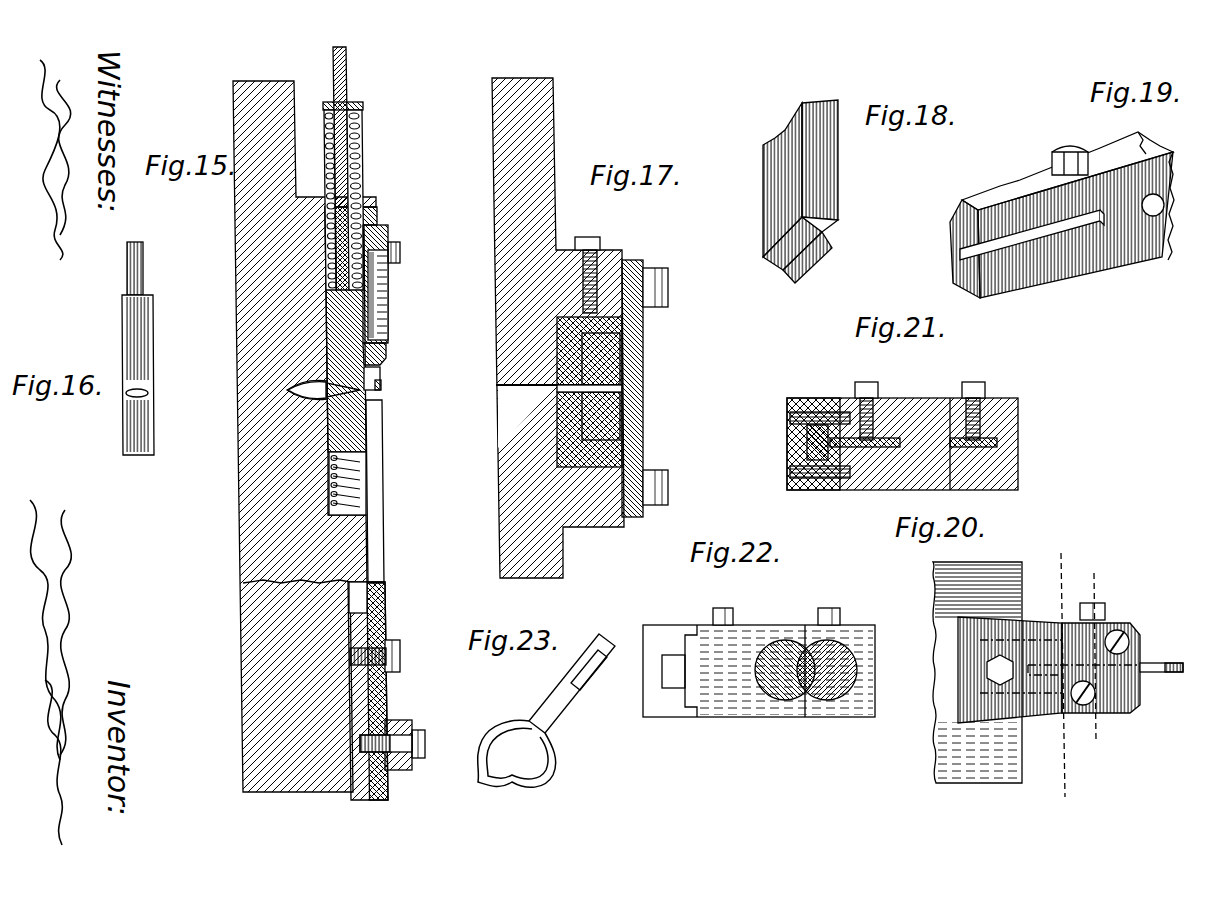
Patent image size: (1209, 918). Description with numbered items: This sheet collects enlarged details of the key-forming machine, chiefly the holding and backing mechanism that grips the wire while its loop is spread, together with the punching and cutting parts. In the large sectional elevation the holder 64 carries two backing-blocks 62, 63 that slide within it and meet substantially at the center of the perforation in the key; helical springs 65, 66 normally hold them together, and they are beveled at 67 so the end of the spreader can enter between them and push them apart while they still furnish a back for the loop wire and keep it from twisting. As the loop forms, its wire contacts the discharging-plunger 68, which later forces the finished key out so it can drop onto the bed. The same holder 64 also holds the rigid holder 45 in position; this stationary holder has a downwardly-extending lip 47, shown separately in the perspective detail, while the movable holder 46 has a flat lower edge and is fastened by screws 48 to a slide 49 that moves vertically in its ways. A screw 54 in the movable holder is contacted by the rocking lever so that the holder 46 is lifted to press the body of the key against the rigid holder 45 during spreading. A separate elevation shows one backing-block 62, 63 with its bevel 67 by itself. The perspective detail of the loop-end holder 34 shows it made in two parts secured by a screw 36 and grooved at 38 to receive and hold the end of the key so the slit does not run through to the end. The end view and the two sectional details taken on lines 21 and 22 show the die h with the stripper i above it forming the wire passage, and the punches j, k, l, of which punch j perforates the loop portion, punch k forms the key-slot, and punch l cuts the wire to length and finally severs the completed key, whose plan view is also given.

In FIG. 15, the holder 64 is at (255, 272).
In FIG. 17, the holder 64 is at (507, 230).
In FIG. 15, the backing-block 62 is at (343, 340).
In FIG. 16, the backing-block 62 is at (183, 352).
In FIG. 15, the backing-block 63 is at (333, 425).
In FIG. 16, the backing-block 63 is at (183, 420).
In FIG. 15, the helical spring 65 is at (340, 490).
In FIG. 15, the helical spring 66 is at (348, 161).
In FIG. 16, the bevel 67 is at (130, 395).
In FIG. 15, the discharging-plunger 68 is at (372, 348).
In FIG. 15, the rigid holder 45 is at (372, 380).
In FIG. 18, the rigid holder 45 is at (828, 191).
In FIG. 15, the movable holder 46 is at (375, 482).
In FIG. 18, the lip 47 is at (830, 227).
In FIG. 15, the screws 48 is at (395, 652).
In FIG. 15, the slide 49 is at (368, 797).
In FIG. 15, the screw 54 is at (418, 732).
In FIG. 19, the holder 34 is at (1030, 290).
In FIG. 19, the screw 36 is at (1066, 148).
In FIG. 19, the groove 38 is at (1082, 235).
In FIG. 17, the stripper i is at (643, 360).
In FIG. 17, the die h is at (643, 448).
In FIG. 21, the punch j is at (902, 444).
In FIG. 21, the punch k is at (973, 433).
In FIG. 20, the punch k is at (1160, 672).
In FIG. 21, the cutting-off punch l is at (807, 457).
In FIG. 22, the cutting-off punch l is at (672, 675).
In FIG. 20, the section line 21 is at (1112, 742).
In FIG. 20, the section line 22 is at (1035, 785).